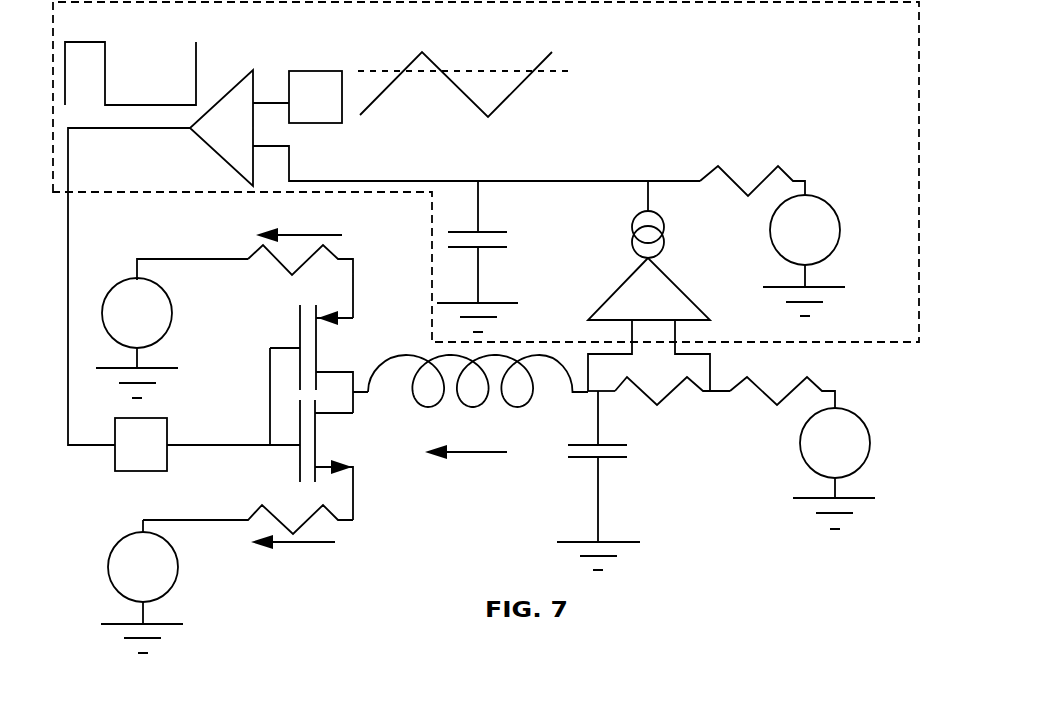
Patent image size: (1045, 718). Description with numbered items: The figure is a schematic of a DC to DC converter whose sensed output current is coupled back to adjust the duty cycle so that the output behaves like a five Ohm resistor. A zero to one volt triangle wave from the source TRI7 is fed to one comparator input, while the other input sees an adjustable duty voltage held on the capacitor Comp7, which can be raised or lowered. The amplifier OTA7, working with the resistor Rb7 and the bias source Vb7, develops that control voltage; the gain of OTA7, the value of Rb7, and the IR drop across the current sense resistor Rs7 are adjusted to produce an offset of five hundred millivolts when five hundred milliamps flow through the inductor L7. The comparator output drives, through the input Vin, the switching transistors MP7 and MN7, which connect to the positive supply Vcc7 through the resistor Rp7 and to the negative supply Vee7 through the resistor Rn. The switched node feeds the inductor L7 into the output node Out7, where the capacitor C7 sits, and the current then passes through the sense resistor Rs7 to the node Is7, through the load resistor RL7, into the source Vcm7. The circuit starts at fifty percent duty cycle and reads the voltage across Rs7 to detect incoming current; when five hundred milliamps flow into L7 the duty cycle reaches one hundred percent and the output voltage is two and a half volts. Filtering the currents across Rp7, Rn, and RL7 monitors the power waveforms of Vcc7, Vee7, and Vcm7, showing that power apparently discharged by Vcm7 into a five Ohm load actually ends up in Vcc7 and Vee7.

The triangle wave source TRI7 is at (533, 105).
The compensation capacitor Comp7 is at (502, 256).
The operational transconductance amplifier OTA7 is at (660, 267).
The bias resistor Rb7 is at (751, 192).
The bias voltage source Vb7 is at (819, 231).
The positive supply Vcc7 is at (172, 312).
The p-side sense resistor Rp7 is at (316, 262).
The PMOS switch transistor MP7 is at (346, 375).
The NMOS switch transistor MN7 is at (265, 460).
The input drive source Vin is at (167, 441).
The n-side sense resistor Rn is at (264, 523).
The negative supply Vee7 is at (204, 570).
The inductor L7 is at (478, 419).
The output node Out7 is at (614, 372).
The output capacitor C7 is at (629, 480).
The current sense resistor Rs7 is at (694, 405).
The sensed current node Is7 is at (725, 372).
The load resistor RL7 is at (826, 378).
The common mode voltage source Vcm7 is at (859, 490).